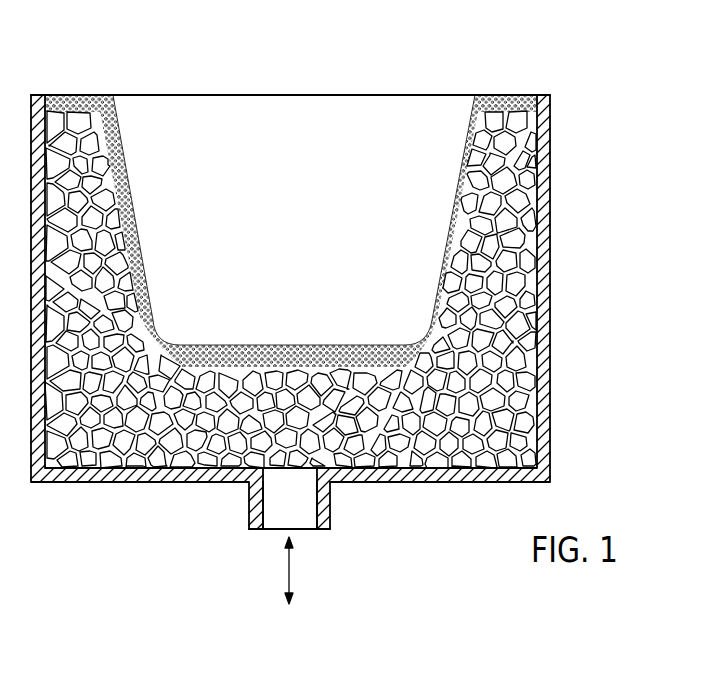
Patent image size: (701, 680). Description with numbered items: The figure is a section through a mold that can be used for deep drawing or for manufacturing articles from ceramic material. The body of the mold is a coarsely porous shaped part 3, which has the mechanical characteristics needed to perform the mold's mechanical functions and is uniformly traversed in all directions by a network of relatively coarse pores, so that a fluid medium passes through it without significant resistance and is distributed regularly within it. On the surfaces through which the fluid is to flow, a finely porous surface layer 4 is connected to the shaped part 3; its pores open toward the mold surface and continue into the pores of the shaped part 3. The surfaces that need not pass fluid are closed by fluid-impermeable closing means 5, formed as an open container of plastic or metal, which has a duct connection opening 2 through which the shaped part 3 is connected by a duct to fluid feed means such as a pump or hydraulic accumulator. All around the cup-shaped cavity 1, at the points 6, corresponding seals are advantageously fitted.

The cup-shaped cavity 1 is at (274, 218).
The duct connection opening 2 is at (303, 525).
The coarsely porous shaped part 3 is at (513, 321).
The finely porous surface layer 4 is at (455, 196).
The fluid-impermeable closing means 5 is at (550, 203).
The points 6 is at (45, 84).